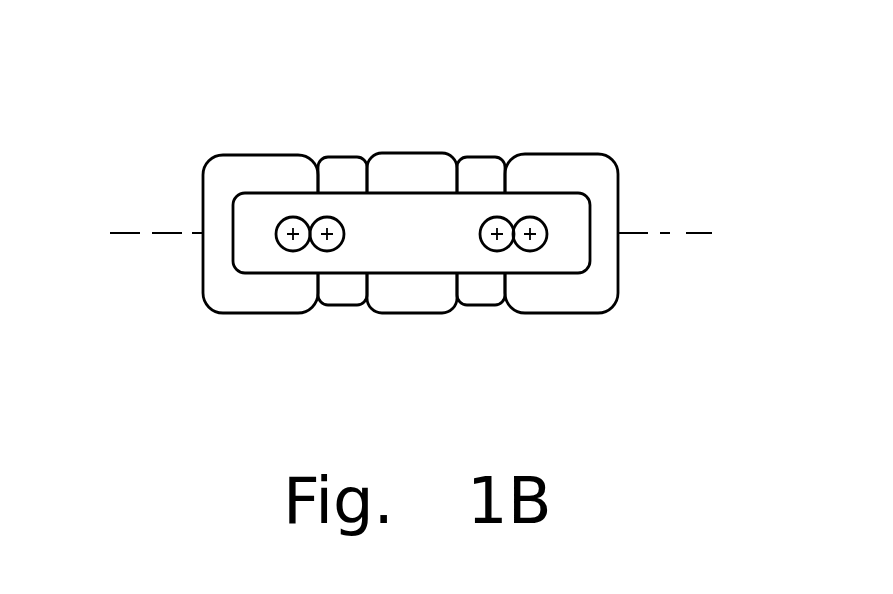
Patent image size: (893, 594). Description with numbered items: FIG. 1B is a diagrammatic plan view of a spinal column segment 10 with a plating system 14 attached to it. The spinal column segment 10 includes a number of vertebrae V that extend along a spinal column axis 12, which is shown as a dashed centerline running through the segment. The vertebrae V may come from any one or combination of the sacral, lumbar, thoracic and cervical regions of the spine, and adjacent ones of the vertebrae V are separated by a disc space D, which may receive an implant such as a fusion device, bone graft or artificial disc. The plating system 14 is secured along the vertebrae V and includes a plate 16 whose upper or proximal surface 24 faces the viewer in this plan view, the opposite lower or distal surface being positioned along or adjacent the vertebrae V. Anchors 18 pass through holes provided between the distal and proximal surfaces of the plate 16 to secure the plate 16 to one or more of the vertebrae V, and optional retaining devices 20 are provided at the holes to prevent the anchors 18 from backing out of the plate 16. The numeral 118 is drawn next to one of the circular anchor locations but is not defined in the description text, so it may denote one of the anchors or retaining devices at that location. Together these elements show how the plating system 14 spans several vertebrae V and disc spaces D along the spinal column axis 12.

The spinal column segment 10 is at (156, 88).
The spinal column axis 12 is at (712, 233).
The plating system 14 is at (612, 130).
The plate 16 is at (598, 210).
The anchor 18 is at (530, 252).
The retaining device 20 is at (327, 216).
The proximal surface 24 is at (407, 217).
The port 118 is at (291, 216).
The vertebra V is at (558, 153).
The disc space D is at (518, 355).